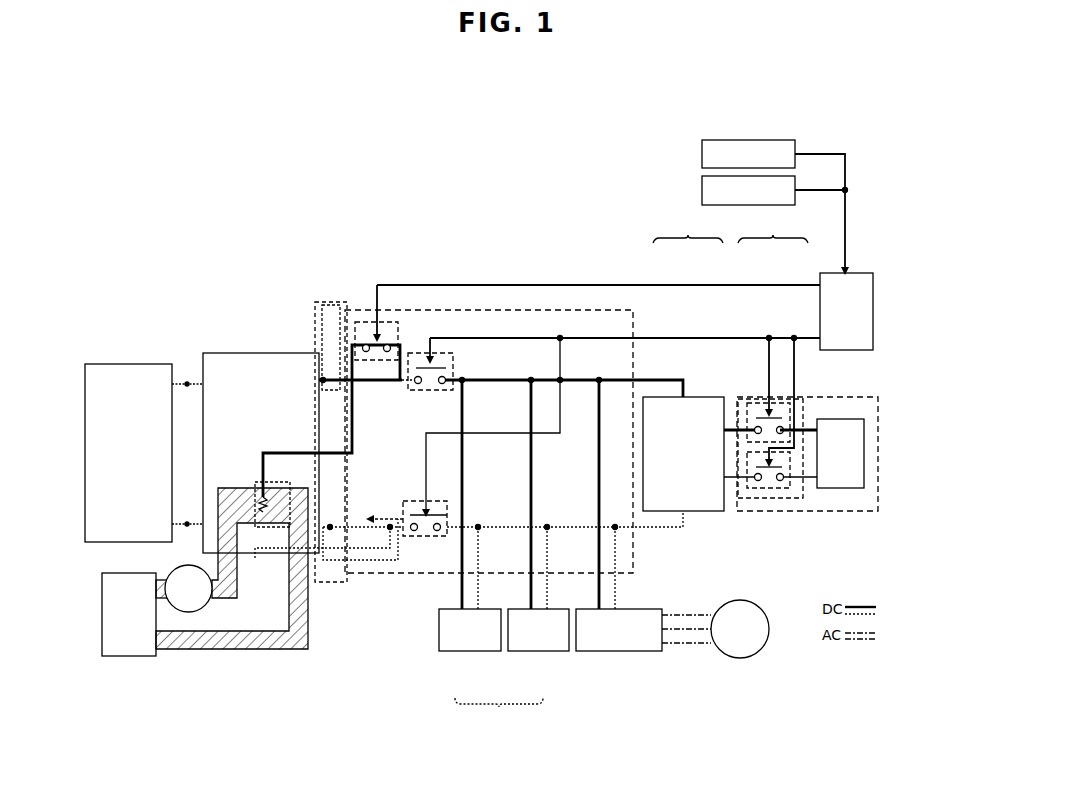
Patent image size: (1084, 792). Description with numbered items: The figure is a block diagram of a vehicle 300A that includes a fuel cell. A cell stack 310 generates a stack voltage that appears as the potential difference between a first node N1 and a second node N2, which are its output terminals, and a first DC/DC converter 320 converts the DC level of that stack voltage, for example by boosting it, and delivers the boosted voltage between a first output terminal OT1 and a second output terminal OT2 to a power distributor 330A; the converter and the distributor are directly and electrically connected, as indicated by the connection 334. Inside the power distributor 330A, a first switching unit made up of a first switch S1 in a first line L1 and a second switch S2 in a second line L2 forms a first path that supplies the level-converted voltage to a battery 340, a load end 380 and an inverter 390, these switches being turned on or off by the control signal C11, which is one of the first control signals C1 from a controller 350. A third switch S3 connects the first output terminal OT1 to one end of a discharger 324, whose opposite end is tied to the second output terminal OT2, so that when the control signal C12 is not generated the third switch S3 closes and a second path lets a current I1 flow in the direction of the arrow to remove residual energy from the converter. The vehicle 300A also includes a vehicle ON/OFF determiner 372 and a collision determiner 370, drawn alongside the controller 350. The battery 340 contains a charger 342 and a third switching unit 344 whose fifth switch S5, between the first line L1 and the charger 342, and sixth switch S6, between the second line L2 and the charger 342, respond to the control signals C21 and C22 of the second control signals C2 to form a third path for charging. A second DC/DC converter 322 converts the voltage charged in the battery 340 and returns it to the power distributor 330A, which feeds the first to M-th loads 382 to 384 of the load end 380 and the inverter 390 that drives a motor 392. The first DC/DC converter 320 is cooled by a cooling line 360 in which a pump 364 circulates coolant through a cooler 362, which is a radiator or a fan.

The vehicle 300A is at (492, 141).
The cell stack 310 is at (137, 364).
The first DC/DC converter 320 is at (229, 353).
The second DC/DC converter 322 is at (706, 511).
The discharger 324 is at (262, 490).
The power distributor 330A is at (557, 310).
The direct electrical connection 334 is at (315, 302).
The battery 340 is at (861, 397).
The charger 342 is at (864, 468).
The third switching unit 344 is at (804, 496).
The controller 350 is at (862, 273).
The cooling line 360 is at (240, 649).
The cooler 362 is at (133, 656).
The pump 364 is at (207, 600).
The collision determiner 370 is at (702, 190).
The vehicle ON/OFF determiner 372 is at (702, 154).
The load end 380 is at (504, 654).
The first load 382 is at (466, 651).
The M-th load 384 is at (535, 651).
The inverter 390 is at (623, 651).
The motor 392 is at (727, 656).
The first switch S1 is at (430, 392).
The second switch S2 is at (412, 537).
The third switch S3 is at (398, 325).
The fifth switch S5 is at (792, 415).
The sixth switch S6 is at (766, 488).
The first node N1 is at (187, 375).
The second node N2 is at (187, 515).
The first output terminal OT1 is at (323, 378).
The second output terminal OT2 is at (330, 527).
The current I1 is at (365, 562).
The first line L1 is at (676, 378).
The second line L2 is at (665, 528).
The first control signals C1 is at (688, 230).
The second control signals C2 is at (773, 230).
The 1-1st control signal C11 is at (705, 338).
The 1-2nd control signal C12 is at (670, 284).
The 2-1st control signal C21 is at (760, 367).
The 2-2nd control signal C22 is at (794, 360).